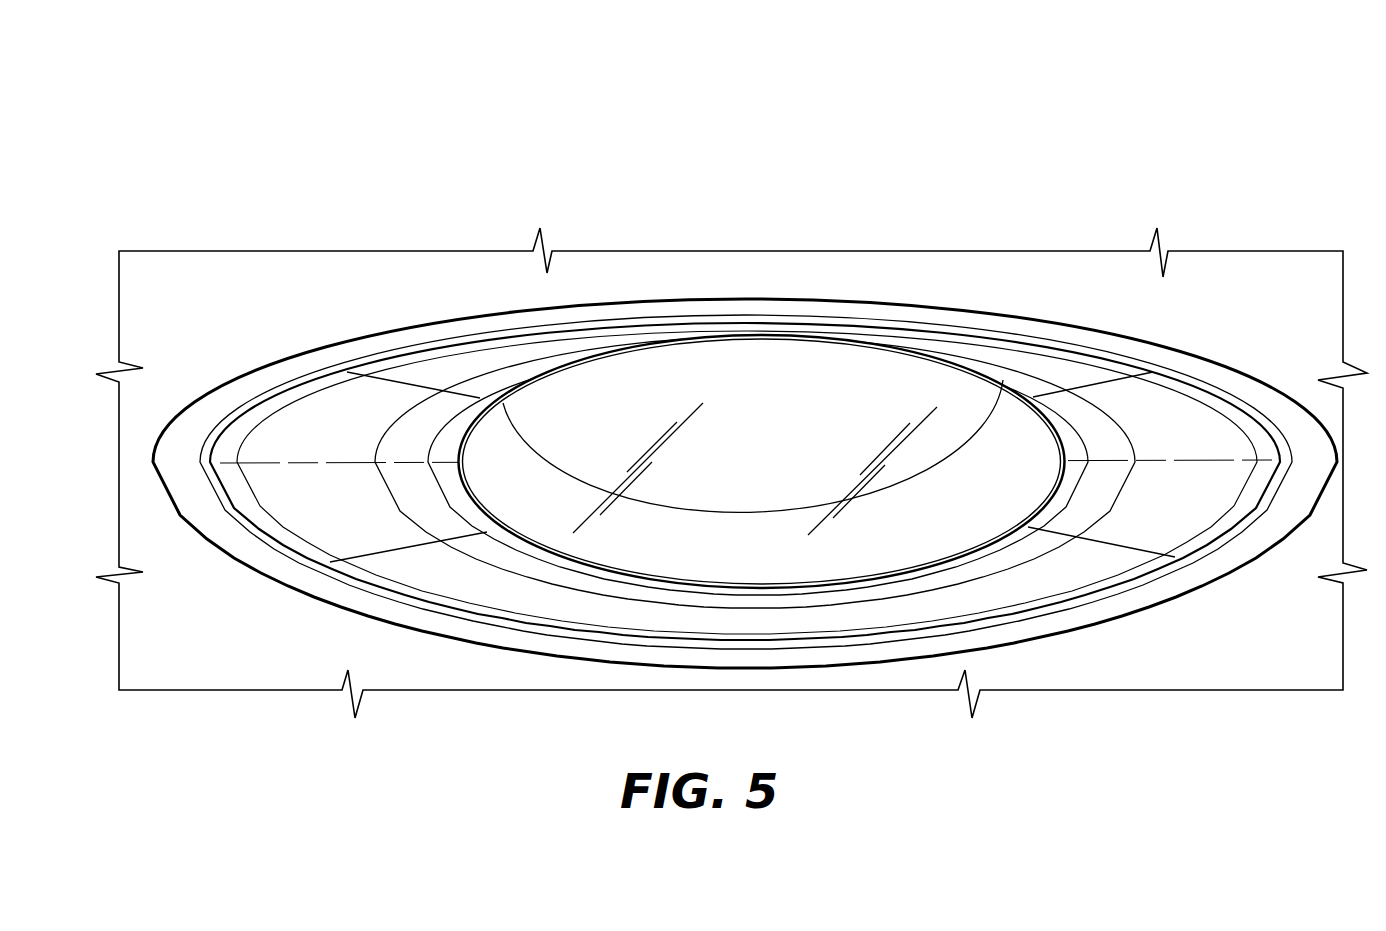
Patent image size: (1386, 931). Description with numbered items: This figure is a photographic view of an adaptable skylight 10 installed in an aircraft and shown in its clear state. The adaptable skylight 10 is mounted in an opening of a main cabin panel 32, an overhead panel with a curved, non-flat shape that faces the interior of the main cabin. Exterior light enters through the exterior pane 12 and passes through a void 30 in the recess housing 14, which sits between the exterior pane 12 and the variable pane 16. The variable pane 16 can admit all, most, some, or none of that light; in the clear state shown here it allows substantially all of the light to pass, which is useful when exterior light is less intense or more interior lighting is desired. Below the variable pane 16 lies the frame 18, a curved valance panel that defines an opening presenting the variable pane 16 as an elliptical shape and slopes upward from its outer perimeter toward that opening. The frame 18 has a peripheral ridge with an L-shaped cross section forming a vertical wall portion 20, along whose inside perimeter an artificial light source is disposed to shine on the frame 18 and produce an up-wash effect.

The adaptable skylight 10 is at (745, 408).
The exterior pane 12 is at (865, 365).
The recess housing 14 is at (943, 513).
The variable pane 16 is at (1018, 513).
The frame 18 is at (1140, 512).
The vertical wall portion 20 is at (174, 474).
The void 30 is at (521, 503).
The main cabin panel 32 is at (1258, 660).